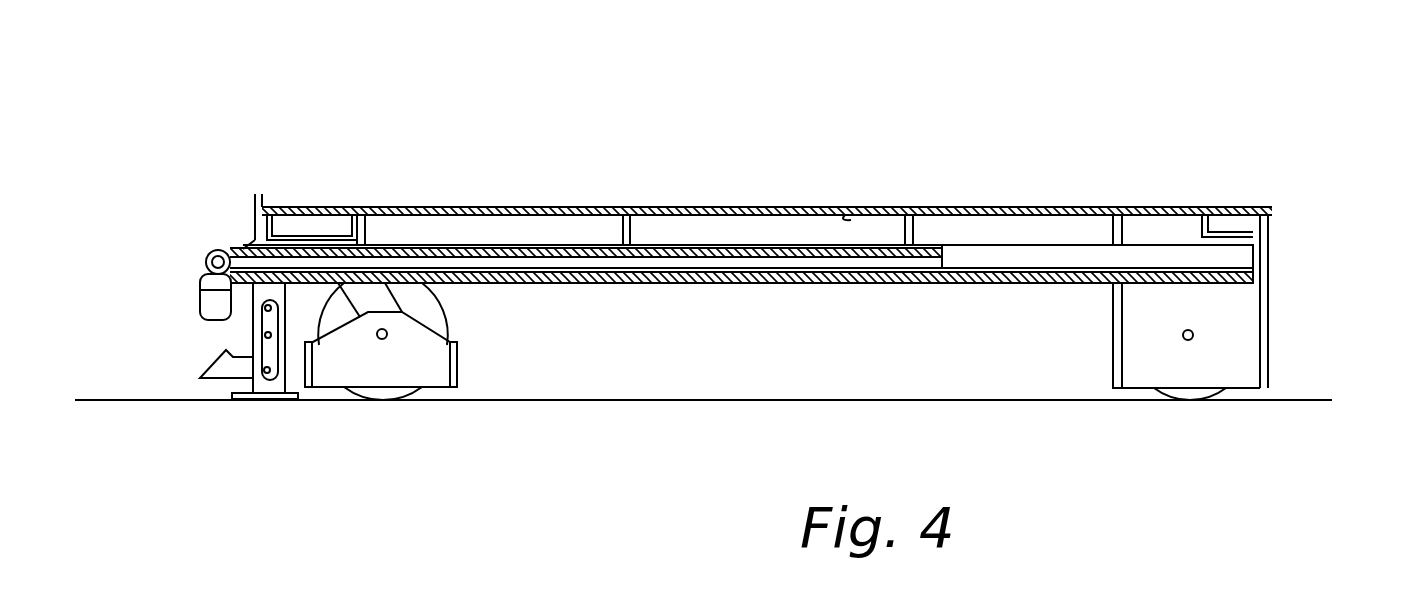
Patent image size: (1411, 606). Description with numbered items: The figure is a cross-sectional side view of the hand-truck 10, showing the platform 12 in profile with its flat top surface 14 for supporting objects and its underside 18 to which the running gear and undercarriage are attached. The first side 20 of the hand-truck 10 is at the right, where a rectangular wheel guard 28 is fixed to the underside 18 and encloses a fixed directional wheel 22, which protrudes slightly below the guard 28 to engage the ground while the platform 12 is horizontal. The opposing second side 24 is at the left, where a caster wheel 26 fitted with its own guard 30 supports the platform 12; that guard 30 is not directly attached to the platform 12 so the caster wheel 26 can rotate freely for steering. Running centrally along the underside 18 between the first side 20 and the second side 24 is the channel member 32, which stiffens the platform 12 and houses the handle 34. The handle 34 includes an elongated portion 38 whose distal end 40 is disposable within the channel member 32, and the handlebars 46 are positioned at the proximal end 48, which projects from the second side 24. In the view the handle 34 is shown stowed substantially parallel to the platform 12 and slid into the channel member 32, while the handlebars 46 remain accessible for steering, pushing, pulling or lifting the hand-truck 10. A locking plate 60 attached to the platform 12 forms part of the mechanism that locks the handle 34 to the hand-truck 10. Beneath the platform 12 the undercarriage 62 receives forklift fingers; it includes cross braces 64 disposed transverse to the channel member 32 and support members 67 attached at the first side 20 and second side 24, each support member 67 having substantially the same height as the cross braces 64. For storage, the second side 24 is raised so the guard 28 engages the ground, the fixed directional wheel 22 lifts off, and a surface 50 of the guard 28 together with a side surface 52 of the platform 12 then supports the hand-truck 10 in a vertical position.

The hand-truck 10 is at (266, 120).
The platform 12 is at (767, 180).
The flat top surface 14 is at (710, 208).
The underside 18 is at (848, 216).
The first side 20 is at (810, 290).
The fixed directional wheels 22 is at (1190, 393).
The second side 24 is at (257, 203).
The caster wheels 26 is at (372, 393).
The wheel guards 28 is at (1250, 364).
The guard 30 is at (432, 362).
The channel member 32 is at (855, 285).
The handle 34 is at (955, 259).
The elongated portion 38 is at (653, 286).
The distal end 40 is at (920, 268).
The handlebars 46 is at (205, 316).
The proximal end 48 is at (226, 250).
The surface 50 is at (1270, 362).
The side surface 52 is at (1272, 212).
The locking plate 60 is at (262, 200).
The undercarriage 62 is at (995, 236).
The cross braces 64 is at (620, 228).
The support members 67 is at (388, 208).